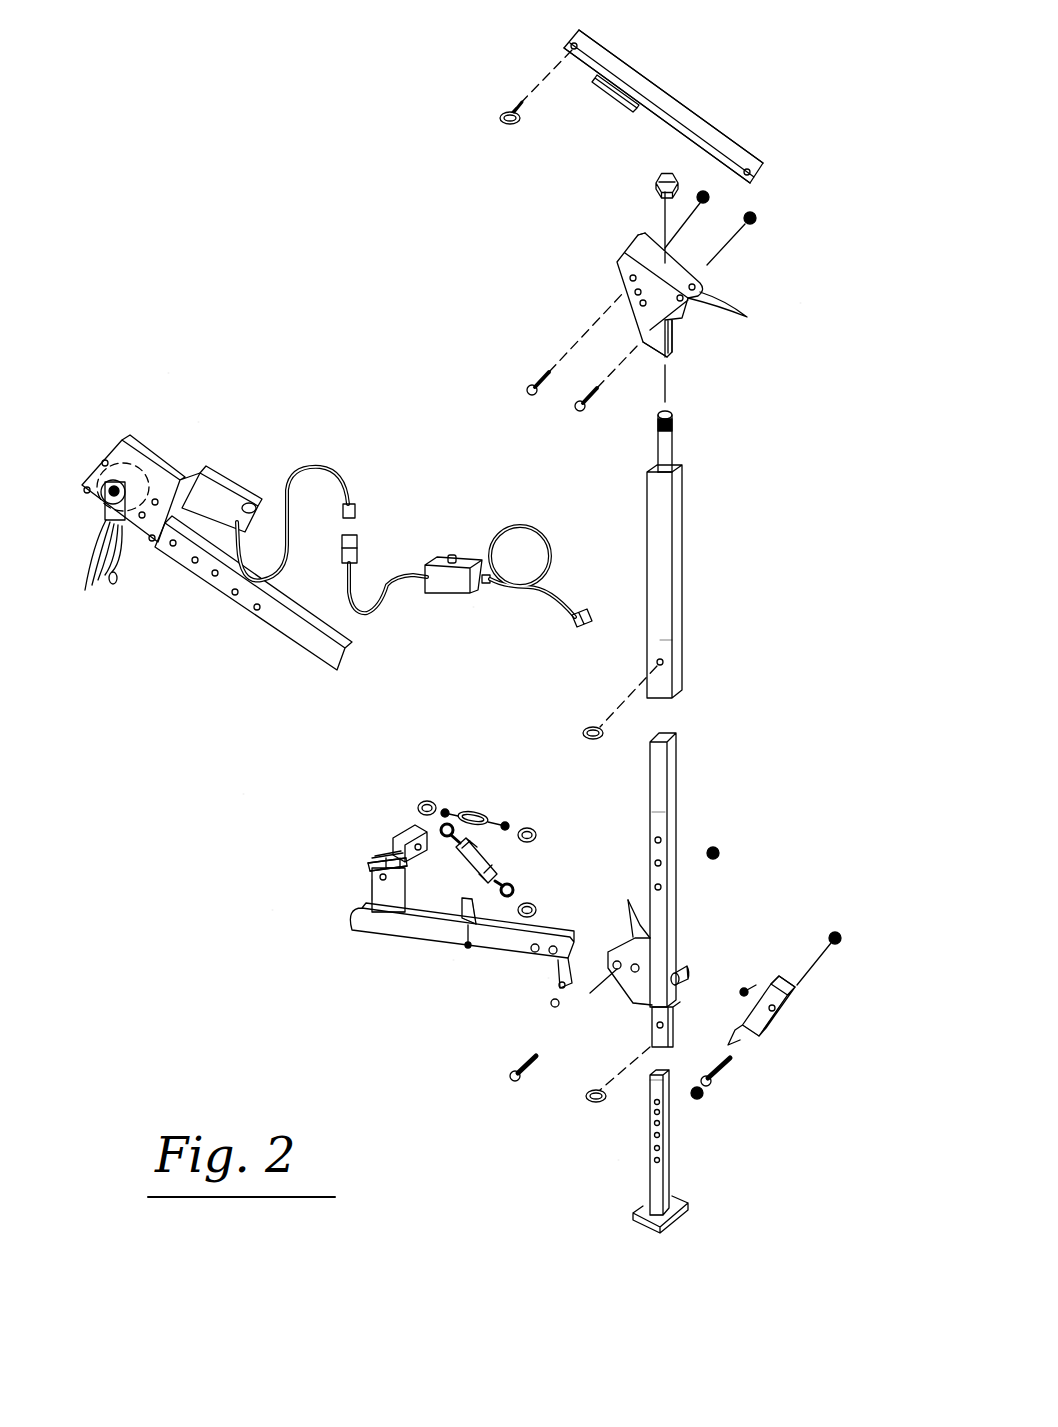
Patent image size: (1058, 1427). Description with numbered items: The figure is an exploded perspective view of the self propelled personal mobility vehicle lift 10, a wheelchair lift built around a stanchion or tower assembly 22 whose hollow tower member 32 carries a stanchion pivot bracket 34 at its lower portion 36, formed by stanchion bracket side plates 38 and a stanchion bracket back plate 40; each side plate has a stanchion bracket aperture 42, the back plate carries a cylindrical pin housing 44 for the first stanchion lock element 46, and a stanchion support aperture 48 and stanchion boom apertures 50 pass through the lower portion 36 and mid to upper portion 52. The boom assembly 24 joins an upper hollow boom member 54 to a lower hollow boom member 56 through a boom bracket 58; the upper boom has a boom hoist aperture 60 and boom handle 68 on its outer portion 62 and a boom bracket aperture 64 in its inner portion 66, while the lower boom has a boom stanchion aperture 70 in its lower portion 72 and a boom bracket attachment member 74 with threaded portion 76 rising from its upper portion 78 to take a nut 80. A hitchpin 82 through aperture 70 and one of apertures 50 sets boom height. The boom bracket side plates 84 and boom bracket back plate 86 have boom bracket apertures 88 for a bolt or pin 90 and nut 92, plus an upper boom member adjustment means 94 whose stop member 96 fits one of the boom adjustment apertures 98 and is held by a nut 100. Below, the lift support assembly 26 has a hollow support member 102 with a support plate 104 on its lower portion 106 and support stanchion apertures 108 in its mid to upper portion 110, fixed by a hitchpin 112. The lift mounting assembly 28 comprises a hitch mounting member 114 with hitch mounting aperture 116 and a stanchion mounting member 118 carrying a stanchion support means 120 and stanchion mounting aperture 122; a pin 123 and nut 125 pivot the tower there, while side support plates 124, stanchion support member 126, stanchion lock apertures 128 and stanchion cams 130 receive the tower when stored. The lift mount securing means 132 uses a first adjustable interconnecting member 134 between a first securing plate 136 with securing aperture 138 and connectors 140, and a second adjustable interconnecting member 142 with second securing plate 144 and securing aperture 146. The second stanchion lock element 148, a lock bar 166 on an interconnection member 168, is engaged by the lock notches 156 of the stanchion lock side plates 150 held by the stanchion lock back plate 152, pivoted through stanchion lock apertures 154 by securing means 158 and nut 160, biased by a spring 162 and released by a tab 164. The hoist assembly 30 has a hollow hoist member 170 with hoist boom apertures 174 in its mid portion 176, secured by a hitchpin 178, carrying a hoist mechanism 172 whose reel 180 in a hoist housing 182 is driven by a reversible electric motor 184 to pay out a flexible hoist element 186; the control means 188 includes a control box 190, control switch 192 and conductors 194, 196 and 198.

The self propelled personal mobility vehicle lift 10 is at (243, 794).
The stanchion or tower assembly 22 is at (680, 760).
The boom assembly 24 is at (800, 303).
The lift support assembly 26 is at (618, 1160).
The lift mounting assembly 28 is at (272, 910).
The hoist assembly 30 is at (168, 373).
The hollow tower member 32 is at (680, 905).
The stanchion pivot bracket 34 is at (678, 957).
The lower portion 36 is at (676, 1005).
The stanchion bracket side plates 38 is at (626, 903).
The stanchion bracket back plate 40 is at (673, 933).
The stanchion bracket aperture 42 is at (615, 978).
The stanchion lock mounting member or substantially cylindrical pin housing 44 is at (692, 975).
The first stanchion lock element 46 is at (800, 1000).
The stanchion support aperture 48 is at (664, 1027).
The stanchion boom apertures 50 is at (661, 862).
The mid to upper portion 52 is at (660, 812).
The upper hollow boom member 54 is at (665, 95).
The lower hollow boom member 56 is at (682, 555).
The boom bracket 58 is at (685, 325).
The boom hoist aperture 60 is at (570, 45).
The outer portion 62 is at (602, 52).
The boom bracket aperture 64 is at (758, 163).
The inner portion 66 is at (728, 140).
The boom handle 68 is at (620, 100).
The boom stanchion aperture 70 is at (664, 662).
The lower portion 72 is at (666, 642).
The boom bracket attachment member 74 is at (674, 450).
The threaded portion 76 is at (673, 418).
The upper portion 78 is at (665, 482).
The nut 80 is at (655, 180).
The hitchpin 82 is at (590, 727).
The boom bracket side plates 84 is at (644, 236).
The boom bracket back plate 86 is at (678, 345).
The boom bracket aperture 88 is at (685, 300).
The bolt or pin 90 is at (576, 410).
The nut 92 is at (758, 220).
The upper boom member adjustment means 94 is at (605, 255).
The stop or limit member 96 is at (527, 392).
The boom adjustment apertures 98 is at (639, 304).
The nut 100 is at (710, 200).
The hollow support member 102 is at (653, 1177).
The support plate 104 is at (653, 1227).
The lower portion 106 is at (667, 1207).
The support stanchion apertures 108 is at (660, 1136).
The mid to upper portion 110 is at (653, 1083).
The hitchpin 112 is at (592, 1104).
The hitch mounting member 114 is at (362, 890).
The hitch mounting aperture 116 is at (410, 832).
The stanchion mounting member 118 is at (355, 926).
The stanchion support means 120 is at (366, 882).
The stanchion mounting aperture 122 is at (548, 944).
The pin or fastening member 123 is at (530, 1063).
The side support plates 124 is at (366, 906).
The nut or fastening means 125 is at (720, 856).
The stanchion support member 126 is at (375, 868).
The stanchion lock aperture 128 is at (388, 862).
The stanchion cam 130 is at (395, 856).
The lift mount securing means 132 is at (461, 923).
The first adjustable interconnecting member 134 is at (490, 813).
The first securing plate 136 is at (470, 917).
The securing aperture 138 is at (465, 905).
The connector 140 is at (430, 802).
The second adjustable interconnecting member 142 is at (460, 910).
The second securing plate 144 is at (470, 948).
The securing aperture 146 is at (453, 960).
The second stanchion lock element 148 is at (548, 978).
The stanchion lock side plates 150 is at (780, 1036).
The stanchion lock back plate 152 is at (800, 982).
The stanchion lock aperture 154 is at (782, 1006).
The lock notch 156 is at (762, 1040).
The securing means 158 is at (718, 1076).
The nut 160 is at (842, 938).
The spring or other bias means 162 is at (746, 990).
The lock movement member or tab 164 is at (766, 1020).
The lock bar 166 is at (553, 1006).
The interconnection member 168 is at (557, 986).
The hollow hoist member 170 is at (318, 652).
The hoist mechanism 172 is at (198, 422).
The hoist boom apertures 174 is at (232, 596).
The mid portion 176 is at (247, 598).
The hitchpin 178 is at (506, 114).
The reel or spool 180 is at (112, 462).
The hoist housing 182 is at (125, 442).
The reversible electric motor 184 is at (220, 481).
The flexible hoist element 186 is at (120, 580).
The control means 188 is at (473, 607).
The control box 190 is at (430, 558).
The control switch 192 is at (453, 556).
The conductor 194 is at (584, 613).
The conductor 196 is at (372, 606).
The conductor 198 is at (318, 478).